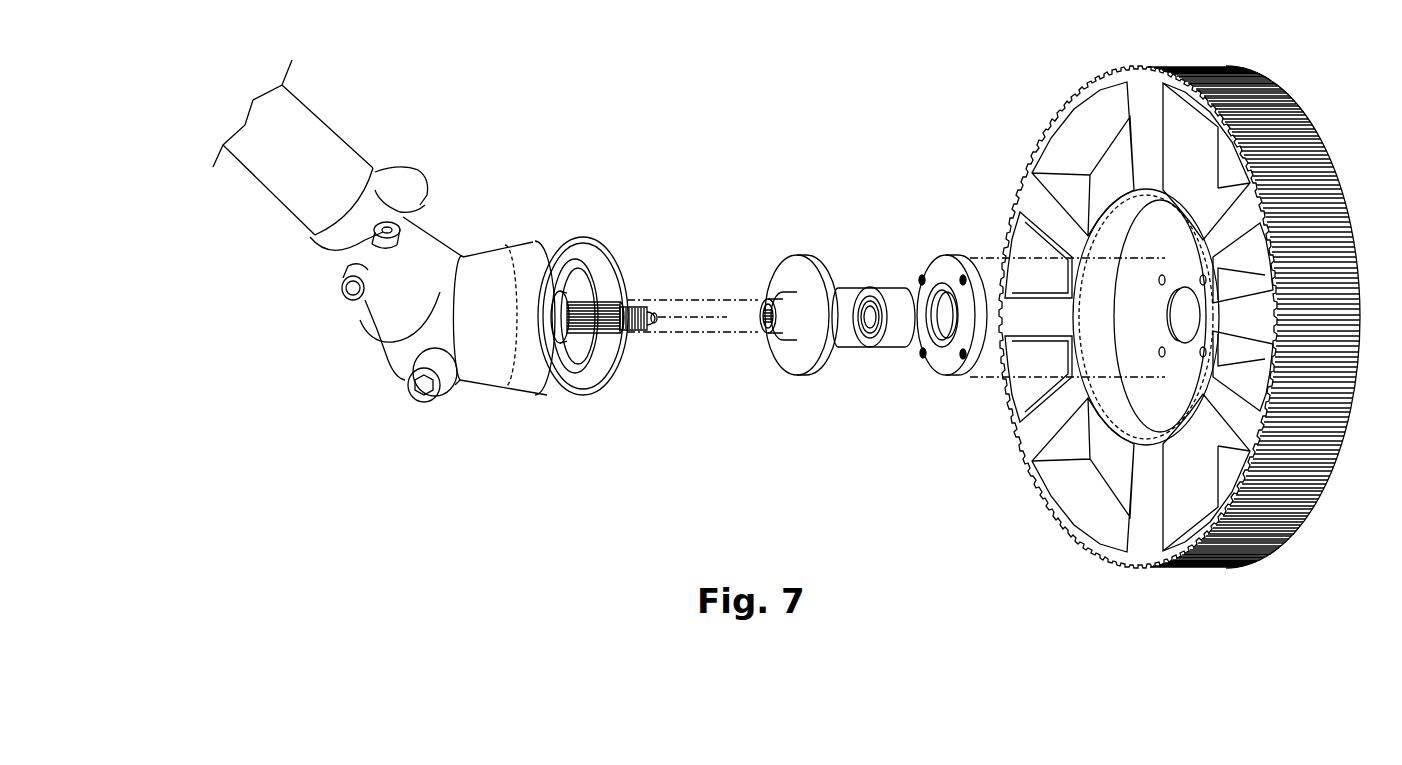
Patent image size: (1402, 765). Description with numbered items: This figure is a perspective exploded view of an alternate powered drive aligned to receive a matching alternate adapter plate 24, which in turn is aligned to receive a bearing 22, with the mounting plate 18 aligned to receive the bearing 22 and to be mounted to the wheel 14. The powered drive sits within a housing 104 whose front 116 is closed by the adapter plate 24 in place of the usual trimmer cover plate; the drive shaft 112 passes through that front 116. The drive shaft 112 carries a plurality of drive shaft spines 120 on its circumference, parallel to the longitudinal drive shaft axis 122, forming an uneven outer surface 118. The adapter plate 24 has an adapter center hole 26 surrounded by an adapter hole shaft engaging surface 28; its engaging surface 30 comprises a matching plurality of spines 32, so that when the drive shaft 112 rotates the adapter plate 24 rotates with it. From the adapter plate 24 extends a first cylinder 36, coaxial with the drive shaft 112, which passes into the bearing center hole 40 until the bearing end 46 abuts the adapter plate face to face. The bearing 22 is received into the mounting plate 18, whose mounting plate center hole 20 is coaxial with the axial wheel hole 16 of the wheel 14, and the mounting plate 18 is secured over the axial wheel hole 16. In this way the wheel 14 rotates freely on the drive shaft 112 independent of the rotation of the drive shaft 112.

The wheel 14 is at (1155, 67).
The axial wheel hole 16 is at (1169, 303).
The mounting plate 18 is at (957, 258).
The mounting plate center hole 20 is at (937, 355).
The bearing 22 is at (887, 287).
The adapter plate 24 is at (800, 258).
The adapter center hole 26 is at (763, 290).
The adapter hole shaft engaging surface 28 is at (755, 305).
The engaging surface 30 is at (752, 338).
The spines 32 is at (787, 375).
The first cylinder 36 is at (847, 287).
The bearing center hole 40 is at (860, 340).
The bearing end 46 is at (867, 348).
The housing 104 is at (503, 257).
The drive shaft 112 is at (640, 333).
The front 116 is at (600, 242).
The uneven outer surface 118 is at (608, 300).
The drive shaft spines 120 is at (577, 392).
The longitudinal drive shaft axis 122 is at (677, 320).